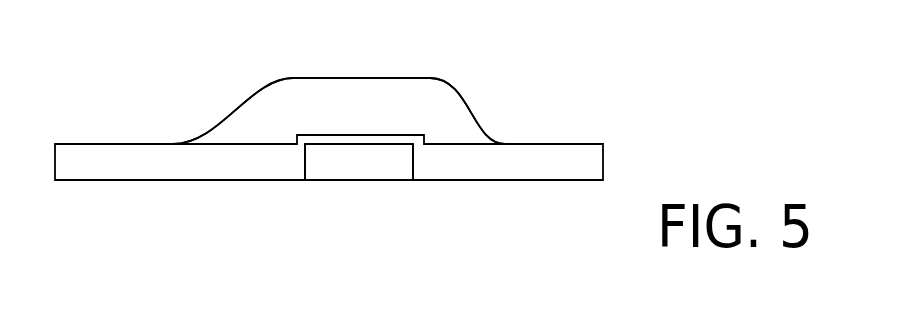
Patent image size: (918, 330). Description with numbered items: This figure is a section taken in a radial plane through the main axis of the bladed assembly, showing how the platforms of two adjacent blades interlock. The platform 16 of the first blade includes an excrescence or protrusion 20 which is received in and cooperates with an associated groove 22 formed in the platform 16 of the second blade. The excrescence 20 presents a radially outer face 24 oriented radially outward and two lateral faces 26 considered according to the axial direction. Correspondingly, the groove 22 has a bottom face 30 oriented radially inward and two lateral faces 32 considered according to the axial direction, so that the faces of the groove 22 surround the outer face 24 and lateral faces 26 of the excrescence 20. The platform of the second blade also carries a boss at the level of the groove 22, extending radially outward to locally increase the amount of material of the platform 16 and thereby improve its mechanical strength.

The platform 16 is at (488, 95).
The excrescence/protrusion 20 is at (364, 194).
The groove 22 is at (428, 186).
The radially outer face 24 is at (385, 143).
The lateral faces 26 is at (317, 180).
The bottom face 30 is at (342, 135).
The lateral faces 32 is at (298, 160).